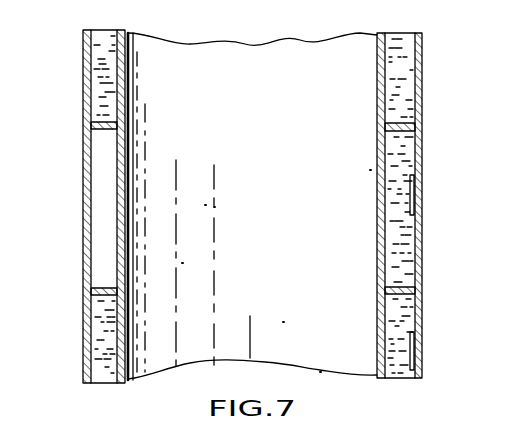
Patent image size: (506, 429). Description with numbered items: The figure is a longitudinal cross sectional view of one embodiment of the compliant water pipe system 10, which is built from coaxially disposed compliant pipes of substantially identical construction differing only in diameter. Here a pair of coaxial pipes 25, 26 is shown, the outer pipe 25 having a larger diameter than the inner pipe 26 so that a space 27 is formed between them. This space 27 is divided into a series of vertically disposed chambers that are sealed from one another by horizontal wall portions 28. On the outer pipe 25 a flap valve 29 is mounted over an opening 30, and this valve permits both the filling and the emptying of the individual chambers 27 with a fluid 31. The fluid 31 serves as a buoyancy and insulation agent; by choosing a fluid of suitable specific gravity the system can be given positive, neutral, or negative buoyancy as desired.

The compliant water pipe system 10 is at (82, 347).
The pipe 25 is at (424, 108).
The pipe 26 is at (128, 268).
The space 27 is at (98, 152).
The horizontal wall portions 28 is at (98, 121).
The flap valve 29 is at (410, 178).
The opening 30 is at (421, 190).
The fluid 31 is at (104, 356).